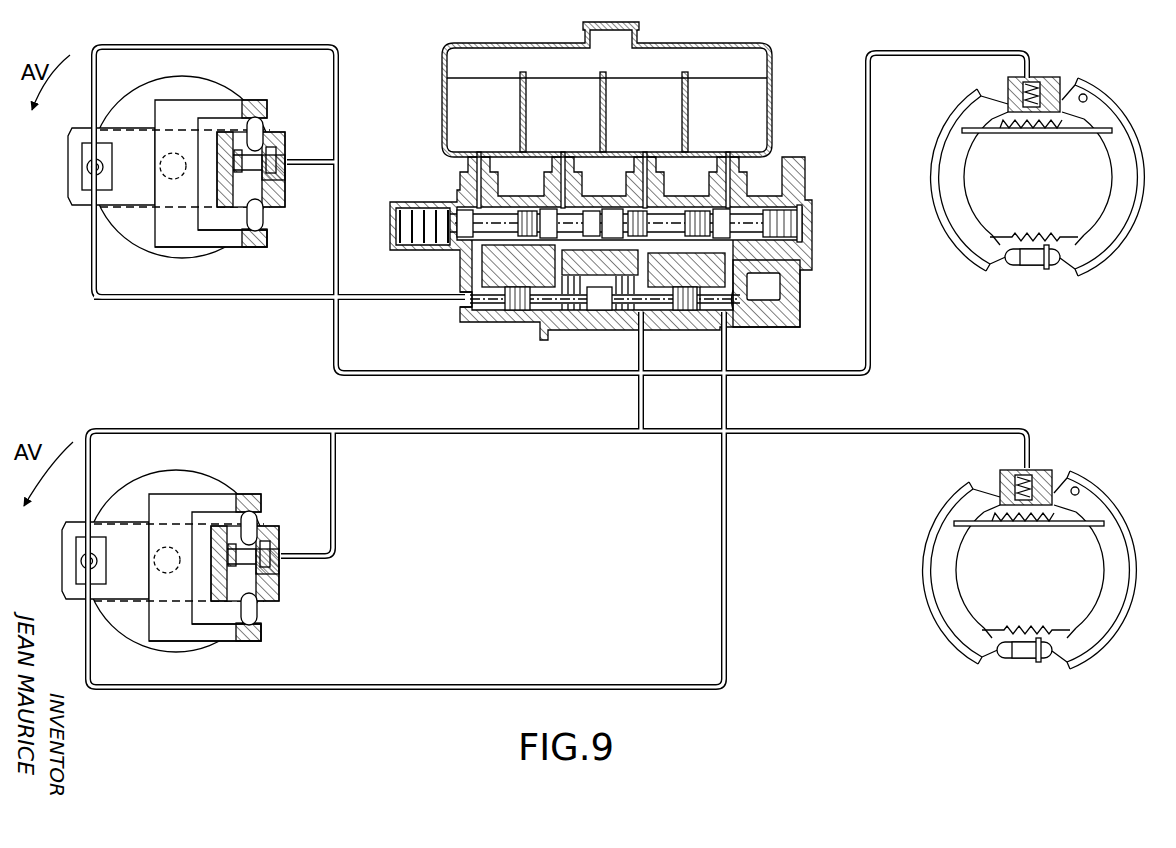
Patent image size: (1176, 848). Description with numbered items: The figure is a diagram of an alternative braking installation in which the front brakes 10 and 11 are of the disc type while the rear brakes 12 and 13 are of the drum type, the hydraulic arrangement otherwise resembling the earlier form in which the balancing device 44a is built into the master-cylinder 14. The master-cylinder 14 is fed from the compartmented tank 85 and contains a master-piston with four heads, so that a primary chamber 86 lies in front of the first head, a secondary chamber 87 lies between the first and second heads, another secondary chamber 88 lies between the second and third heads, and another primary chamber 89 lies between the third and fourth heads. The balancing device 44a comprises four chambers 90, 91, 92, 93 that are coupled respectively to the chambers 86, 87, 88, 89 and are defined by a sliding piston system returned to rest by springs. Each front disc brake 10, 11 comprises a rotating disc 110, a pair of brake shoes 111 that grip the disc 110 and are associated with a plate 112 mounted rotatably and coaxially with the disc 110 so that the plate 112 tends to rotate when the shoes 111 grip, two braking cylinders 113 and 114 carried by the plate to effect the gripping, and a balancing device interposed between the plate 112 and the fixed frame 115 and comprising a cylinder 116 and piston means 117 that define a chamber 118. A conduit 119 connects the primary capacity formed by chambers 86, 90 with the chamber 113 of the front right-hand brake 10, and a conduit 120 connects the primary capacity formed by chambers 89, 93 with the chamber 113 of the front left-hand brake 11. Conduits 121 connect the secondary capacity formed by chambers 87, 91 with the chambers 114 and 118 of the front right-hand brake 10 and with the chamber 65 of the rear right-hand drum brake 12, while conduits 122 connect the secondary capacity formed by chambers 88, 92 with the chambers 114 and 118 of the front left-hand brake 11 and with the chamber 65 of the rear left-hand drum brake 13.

The front right-hand brake 10 is at (224, 86).
The front left-hand brake 11 is at (203, 477).
The rear right-hand brake 12 is at (1118, 92).
The rear left-hand brake 13 is at (1121, 500).
The master-cylinder 14 is at (797, 153).
The balancing device 44a is at (458, 305).
The chamber 65 is at (1038, 77).
The compartmented tank 85 is at (773, 70).
The primary chamber 86 is at (498, 243).
The secondary chamber 87 is at (575, 242).
The secondary chamber 88 is at (666, 243).
The primary chamber 89 is at (753, 243).
The chamber 90 is at (487, 300).
The chamber 91 is at (578, 330).
The chamber 92 is at (645, 325).
The chamber 93 is at (723, 300).
The rotating disc 110 is at (125, 97).
The brake shoes 111 is at (66, 172).
The plate 112 is at (120, 192).
The braking cylinder 113 is at (84, 178).
The braking cylinder 114 is at (82, 147).
The fixed frame 115 is at (180, 235).
The cylinder 116 is at (283, 148).
The piston means 117 is at (258, 150).
The chamber 118 is at (279, 168).
The conduit 119 is at (265, 300).
The conduit 120 is at (721, 600).
The conduits 121 is at (207, 45).
The conduits 122 is at (645, 400).